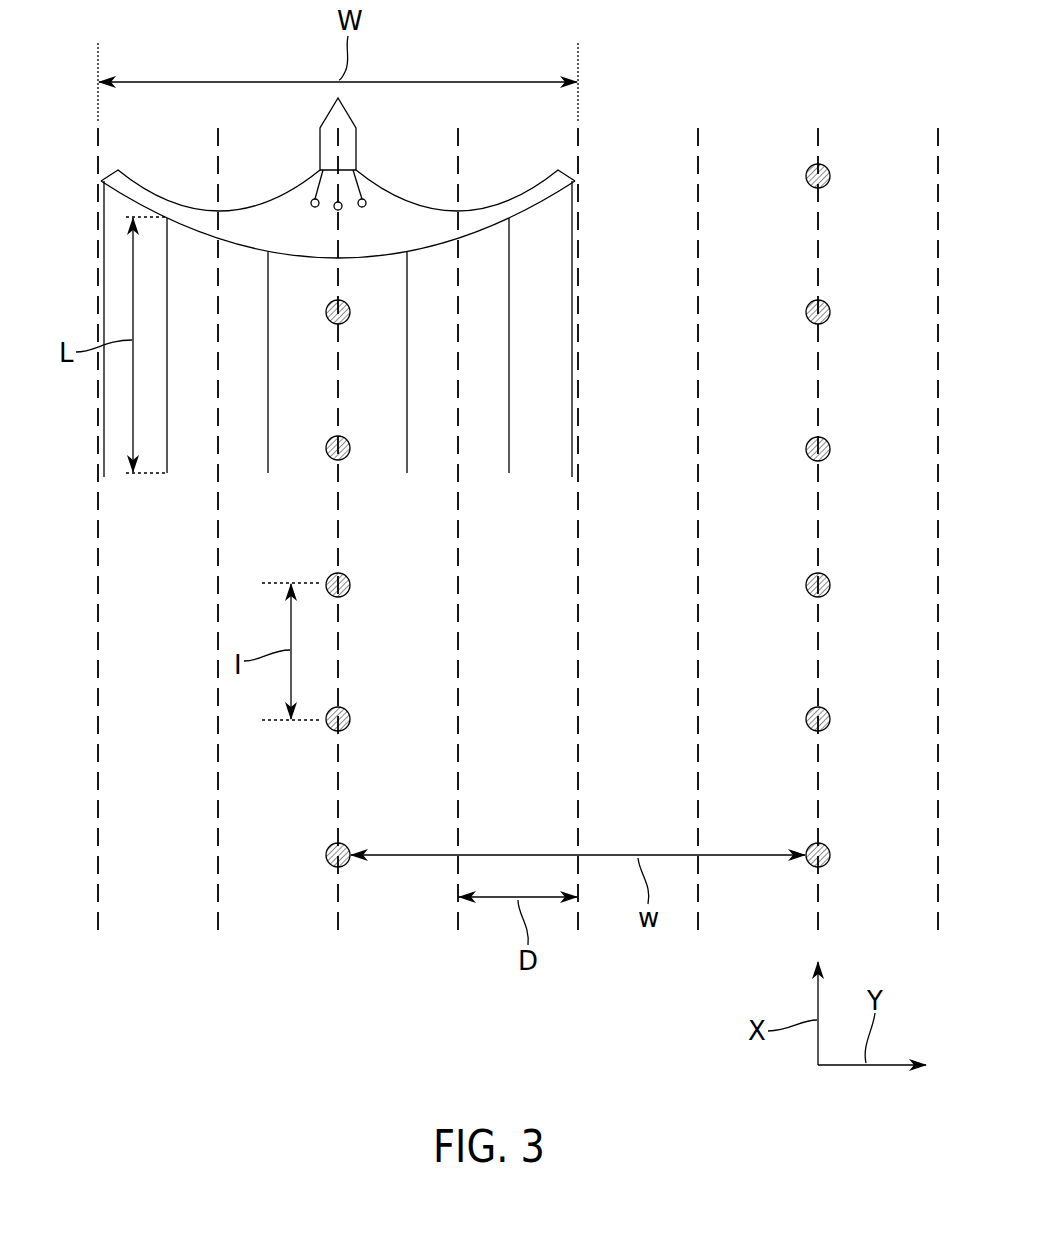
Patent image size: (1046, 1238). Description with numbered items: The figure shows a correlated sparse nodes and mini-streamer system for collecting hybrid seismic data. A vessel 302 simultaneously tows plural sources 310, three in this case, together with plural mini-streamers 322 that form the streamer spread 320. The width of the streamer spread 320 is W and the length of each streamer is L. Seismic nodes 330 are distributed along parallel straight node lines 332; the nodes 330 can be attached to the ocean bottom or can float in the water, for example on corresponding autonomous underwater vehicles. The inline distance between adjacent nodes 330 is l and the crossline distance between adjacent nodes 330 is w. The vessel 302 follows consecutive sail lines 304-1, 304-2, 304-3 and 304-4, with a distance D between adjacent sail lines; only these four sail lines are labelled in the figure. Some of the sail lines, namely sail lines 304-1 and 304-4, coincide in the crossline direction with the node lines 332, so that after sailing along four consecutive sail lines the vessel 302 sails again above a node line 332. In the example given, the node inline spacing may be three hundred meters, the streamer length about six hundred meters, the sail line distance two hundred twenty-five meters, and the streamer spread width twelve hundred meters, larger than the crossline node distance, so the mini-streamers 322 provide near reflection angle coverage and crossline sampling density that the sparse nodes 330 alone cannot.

The vessel 302 is at (320, 150).
The sources 310 is at (372, 197).
The streamer spread 320 is at (540, 188).
The mini-streamers 322 is at (510, 331).
The nodes 330 is at (351, 583).
The node lines 332 is at (339, 900).
The first sail line 304-1 is at (339, 770).
The second sail line 304-2 is at (459, 668).
The third sail line 304-3 is at (579, 608).
The fourth sail line 304-4 is at (819, 493).